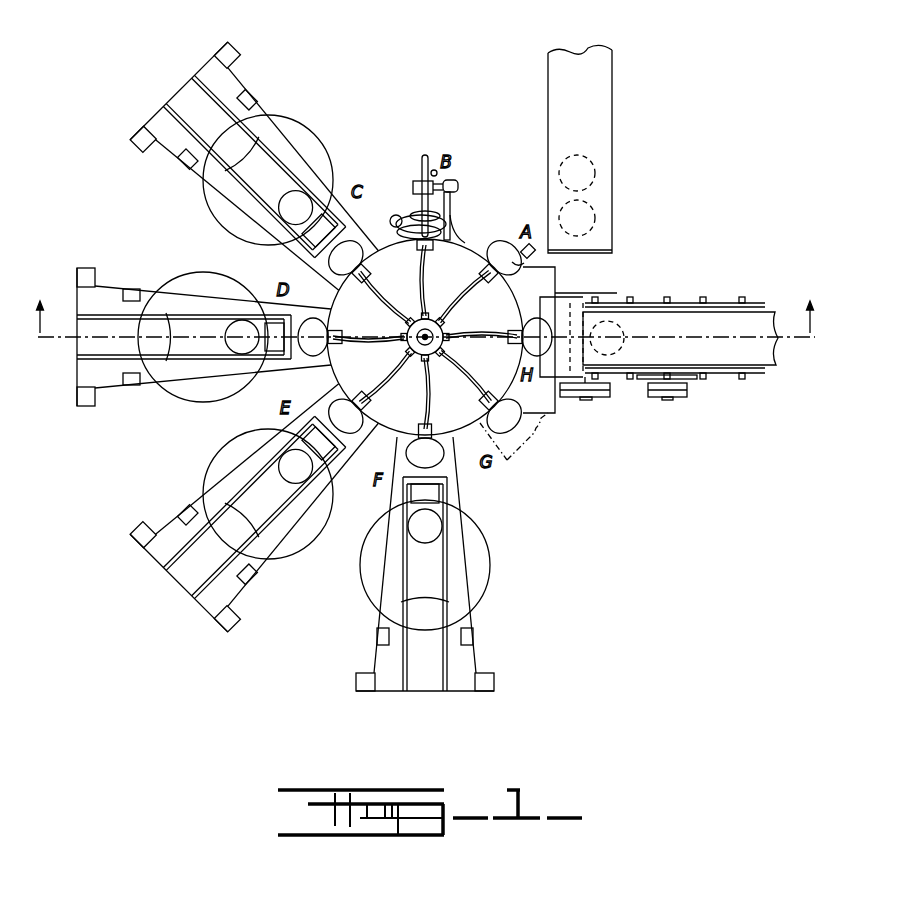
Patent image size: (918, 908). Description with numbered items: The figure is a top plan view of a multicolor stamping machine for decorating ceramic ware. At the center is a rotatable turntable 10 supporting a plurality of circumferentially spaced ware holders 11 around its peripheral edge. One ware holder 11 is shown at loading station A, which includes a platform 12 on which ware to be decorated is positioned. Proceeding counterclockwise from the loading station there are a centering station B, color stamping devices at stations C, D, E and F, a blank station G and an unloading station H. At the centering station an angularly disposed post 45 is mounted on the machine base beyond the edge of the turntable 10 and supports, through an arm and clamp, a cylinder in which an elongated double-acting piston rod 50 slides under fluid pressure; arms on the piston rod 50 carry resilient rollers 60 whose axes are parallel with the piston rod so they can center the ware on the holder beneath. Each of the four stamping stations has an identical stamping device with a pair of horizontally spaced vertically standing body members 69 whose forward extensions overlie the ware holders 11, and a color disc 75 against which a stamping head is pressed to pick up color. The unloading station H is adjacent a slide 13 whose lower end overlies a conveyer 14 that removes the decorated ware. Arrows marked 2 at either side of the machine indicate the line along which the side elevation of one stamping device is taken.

The section line 2- 2 is at (425, 309).
The rotatable turntable 10 is at (478, 367).
The ware holder 11 is at (363, 257).
The platform 12 is at (604, 202).
The slide 13 is at (548, 368).
The conveyer 14 is at (641, 335).
The angularly disposed post 45 is at (458, 210).
The piston rod 50 is at (422, 165).
The resilient rollers 60 is at (413, 214).
The body members 69 is at (230, 170).
The color disc 75 is at (298, 121).